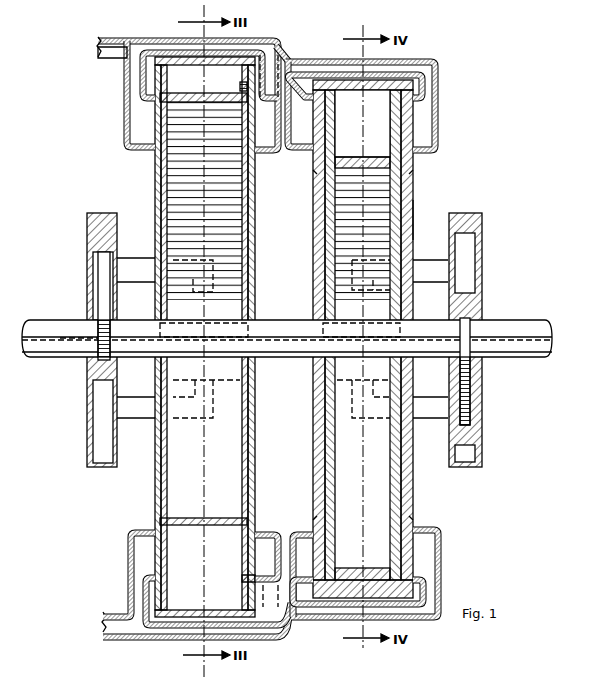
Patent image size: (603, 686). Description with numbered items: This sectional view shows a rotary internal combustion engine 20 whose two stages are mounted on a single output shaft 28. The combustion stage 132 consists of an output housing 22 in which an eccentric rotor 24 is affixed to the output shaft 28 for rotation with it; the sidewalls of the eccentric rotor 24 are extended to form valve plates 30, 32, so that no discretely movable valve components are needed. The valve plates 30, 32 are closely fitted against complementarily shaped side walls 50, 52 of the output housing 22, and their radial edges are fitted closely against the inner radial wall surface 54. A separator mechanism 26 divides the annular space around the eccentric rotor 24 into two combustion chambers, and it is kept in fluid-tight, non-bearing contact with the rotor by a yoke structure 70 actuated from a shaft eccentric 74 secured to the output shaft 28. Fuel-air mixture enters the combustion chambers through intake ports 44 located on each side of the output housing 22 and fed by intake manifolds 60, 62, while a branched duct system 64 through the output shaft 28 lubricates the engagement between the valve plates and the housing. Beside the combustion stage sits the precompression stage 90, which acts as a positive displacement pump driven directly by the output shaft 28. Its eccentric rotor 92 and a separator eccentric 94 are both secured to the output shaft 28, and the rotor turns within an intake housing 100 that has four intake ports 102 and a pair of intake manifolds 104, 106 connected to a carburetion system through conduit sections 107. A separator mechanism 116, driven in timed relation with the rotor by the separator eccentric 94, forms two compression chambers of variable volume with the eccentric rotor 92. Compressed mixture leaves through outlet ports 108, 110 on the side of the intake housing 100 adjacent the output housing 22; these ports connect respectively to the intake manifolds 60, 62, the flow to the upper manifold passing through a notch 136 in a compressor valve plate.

The rotary engine 20 is at (451, 170).
The output housing 22 is at (417, 152).
The eccentric rotor 24 is at (410, 154).
The separator mechanism 26 is at (483, 224).
The output shaft 28 is at (498, 320).
The valve plate 30 is at (337, 105).
The valve plate 32 is at (373, 156).
The intake ports 44 is at (418, 170).
The side wall 50 is at (313, 225).
The side wall 52 is at (413, 220).
The inner radial wall surface 54 is at (378, 583).
The intake manifold 60 is at (301, 60).
The intake manifold 62 is at (291, 613).
The branched duct system 64 is at (428, 333).
The yoke structure 70 is at (433, 256).
The shaft eccentric 74 is at (478, 402).
The precompression stage 90 is at (100, 170).
The eccentric rotor 92 is at (185, 525).
The separator eccentric 94 is at (104, 280).
The intake housing 100 is at (157, 180).
The intake ports 102 is at (158, 107).
The intake manifold 104 is at (135, 39).
The intake manifold 106 is at (135, 640).
The conduit sections 107 is at (120, 49).
The outlet port 108 is at (283, 56).
The outlet port 110 is at (262, 590).
The separator mechanism 116 is at (87, 222).
The combustion stage 132 is at (469, 100).
The notch 136 is at (255, 73).